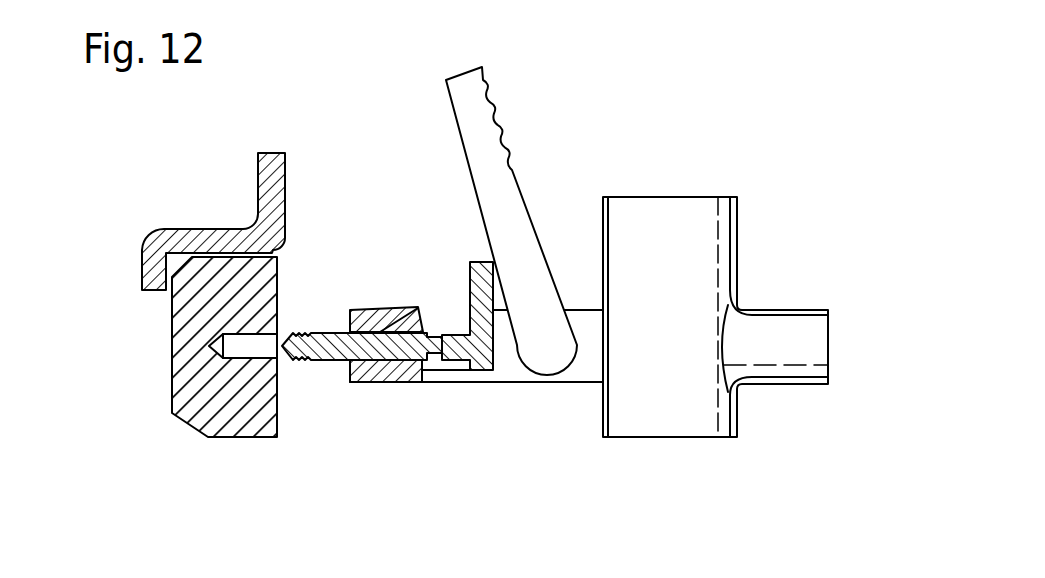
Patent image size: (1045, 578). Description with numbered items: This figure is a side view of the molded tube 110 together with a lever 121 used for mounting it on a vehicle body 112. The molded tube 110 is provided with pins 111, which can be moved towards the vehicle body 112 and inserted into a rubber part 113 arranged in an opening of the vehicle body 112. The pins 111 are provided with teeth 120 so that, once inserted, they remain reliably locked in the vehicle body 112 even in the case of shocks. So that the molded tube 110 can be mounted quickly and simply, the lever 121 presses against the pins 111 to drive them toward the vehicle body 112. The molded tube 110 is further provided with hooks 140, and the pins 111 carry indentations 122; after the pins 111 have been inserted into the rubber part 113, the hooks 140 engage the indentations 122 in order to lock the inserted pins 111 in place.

The molded tube 110 is at (683, 191).
The pins 111 is at (392, 363).
The vehicle body 112 is at (276, 152).
The rubber part 113 is at (227, 422).
The teeth 120 is at (303, 363).
The lever 121 is at (513, 202).
The indentations 122 is at (440, 333).
The hooks 140 is at (403, 308).